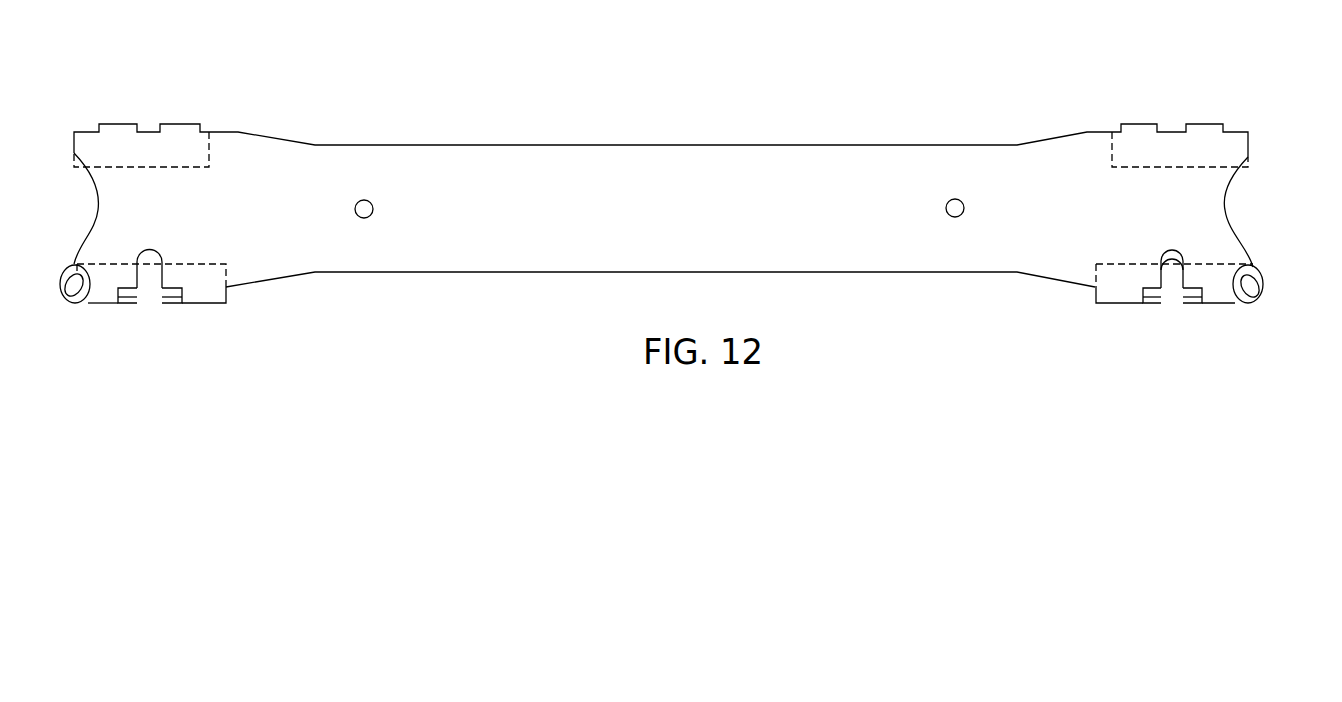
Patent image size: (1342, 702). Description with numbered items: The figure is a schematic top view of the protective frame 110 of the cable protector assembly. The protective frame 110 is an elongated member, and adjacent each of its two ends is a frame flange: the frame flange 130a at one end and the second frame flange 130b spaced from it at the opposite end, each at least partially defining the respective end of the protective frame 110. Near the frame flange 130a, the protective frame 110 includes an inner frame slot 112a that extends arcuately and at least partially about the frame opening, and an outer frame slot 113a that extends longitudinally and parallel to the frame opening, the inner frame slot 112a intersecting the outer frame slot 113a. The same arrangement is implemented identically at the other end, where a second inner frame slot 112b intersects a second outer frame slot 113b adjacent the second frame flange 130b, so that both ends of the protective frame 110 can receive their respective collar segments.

The protective frame 110 is at (1225, 83).
The inner frame slot 112a is at (150, 276).
The second inner frame slot 112b is at (1178, 280).
The outer frame slot 113a is at (127, 290).
The second outer frame slot 113b is at (1153, 287).
The frame flange 130a is at (103, 292).
The second frame flange 130b is at (1115, 292).